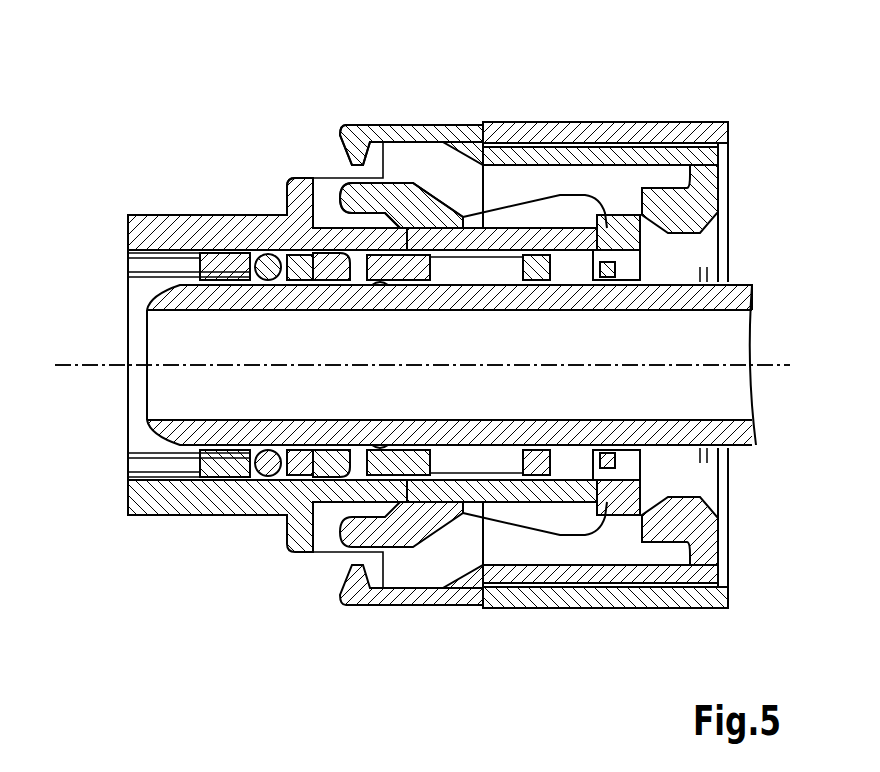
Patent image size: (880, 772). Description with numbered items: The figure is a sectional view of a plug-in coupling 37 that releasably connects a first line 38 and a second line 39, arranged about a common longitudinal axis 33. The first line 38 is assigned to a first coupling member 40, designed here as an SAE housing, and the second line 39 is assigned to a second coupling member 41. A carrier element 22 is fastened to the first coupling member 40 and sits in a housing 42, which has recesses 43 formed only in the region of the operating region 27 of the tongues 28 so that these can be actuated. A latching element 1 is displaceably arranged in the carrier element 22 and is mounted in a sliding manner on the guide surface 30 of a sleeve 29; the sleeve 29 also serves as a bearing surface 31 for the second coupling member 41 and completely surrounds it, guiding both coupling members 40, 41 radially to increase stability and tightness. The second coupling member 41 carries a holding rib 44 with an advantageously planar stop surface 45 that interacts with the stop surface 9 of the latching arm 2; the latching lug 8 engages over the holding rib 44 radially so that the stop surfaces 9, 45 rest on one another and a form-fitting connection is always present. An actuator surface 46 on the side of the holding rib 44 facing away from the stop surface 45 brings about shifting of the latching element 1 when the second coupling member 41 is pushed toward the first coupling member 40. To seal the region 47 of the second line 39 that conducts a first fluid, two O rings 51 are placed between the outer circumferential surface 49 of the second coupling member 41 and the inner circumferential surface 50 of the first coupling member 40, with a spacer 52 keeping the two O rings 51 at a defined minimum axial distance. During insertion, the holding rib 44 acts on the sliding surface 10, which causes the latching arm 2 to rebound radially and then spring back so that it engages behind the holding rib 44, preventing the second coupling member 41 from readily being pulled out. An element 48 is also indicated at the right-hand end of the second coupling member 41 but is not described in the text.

The latching element 1 is at (447, 196).
The latching arm 2 is at (592, 233).
The latching lug 8 is at (613, 510).
The stop surface 9 is at (645, 245).
The sliding surface 10 is at (635, 460).
The carrier element 22 is at (545, 218).
The operating region 27 is at (350, 122).
The tongues 28 is at (388, 122).
The sleeve 29 is at (420, 268).
The guide surface 30 is at (415, 180).
The bearing surface 31 is at (382, 285).
The longitudinal axis 33 is at (102, 372).
The plug-in coupling 37 is at (405, 101).
The first line 38 is at (148, 214).
The second line 39 is at (770, 268).
The first coupling member 40 is at (186, 226).
The second coupling member 41 is at (757, 283).
The housing 42 is at (688, 120).
The recesses 43 is at (476, 122).
The holding rib 44 is at (622, 163).
The stop surface 45 is at (597, 262).
The actuator surface 46 is at (566, 200).
The region 47 is at (143, 340).
The pipe bore 48 is at (735, 342).
The outer circumferential surface 49 is at (192, 452).
The inner circumferential surface 50 is at (150, 470).
The O rings 51 is at (320, 475).
The spacer 52 is at (268, 465).